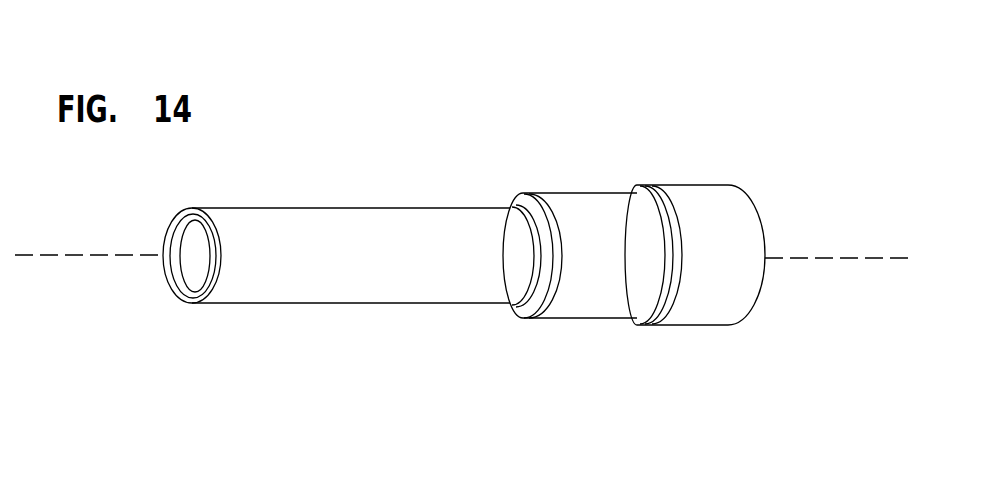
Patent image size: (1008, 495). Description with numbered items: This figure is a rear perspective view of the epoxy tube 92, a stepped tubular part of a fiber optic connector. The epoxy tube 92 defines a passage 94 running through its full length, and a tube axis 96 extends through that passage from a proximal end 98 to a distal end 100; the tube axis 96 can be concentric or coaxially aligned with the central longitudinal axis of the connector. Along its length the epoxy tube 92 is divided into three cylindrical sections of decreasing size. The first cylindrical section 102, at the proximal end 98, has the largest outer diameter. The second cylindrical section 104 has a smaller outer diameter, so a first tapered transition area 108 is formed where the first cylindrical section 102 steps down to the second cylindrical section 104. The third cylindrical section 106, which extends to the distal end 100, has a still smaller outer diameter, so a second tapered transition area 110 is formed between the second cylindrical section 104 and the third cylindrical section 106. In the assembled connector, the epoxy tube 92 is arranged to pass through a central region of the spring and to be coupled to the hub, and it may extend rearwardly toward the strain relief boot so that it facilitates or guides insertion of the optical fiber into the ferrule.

The epoxy tube 92 is at (397, 244).
The passage 94 is at (198, 263).
The tube axis 96 is at (853, 258).
The proximal end 98 is at (740, 325).
The distal end 100 is at (182, 308).
The first cylindrical section 102 is at (713, 185).
The second cylindrical section 104 is at (563, 320).
The third cylindrical section 106 is at (357, 305).
The first tapered transition area 108 is at (628, 186).
The second tapered transition area 110 is at (500, 315).